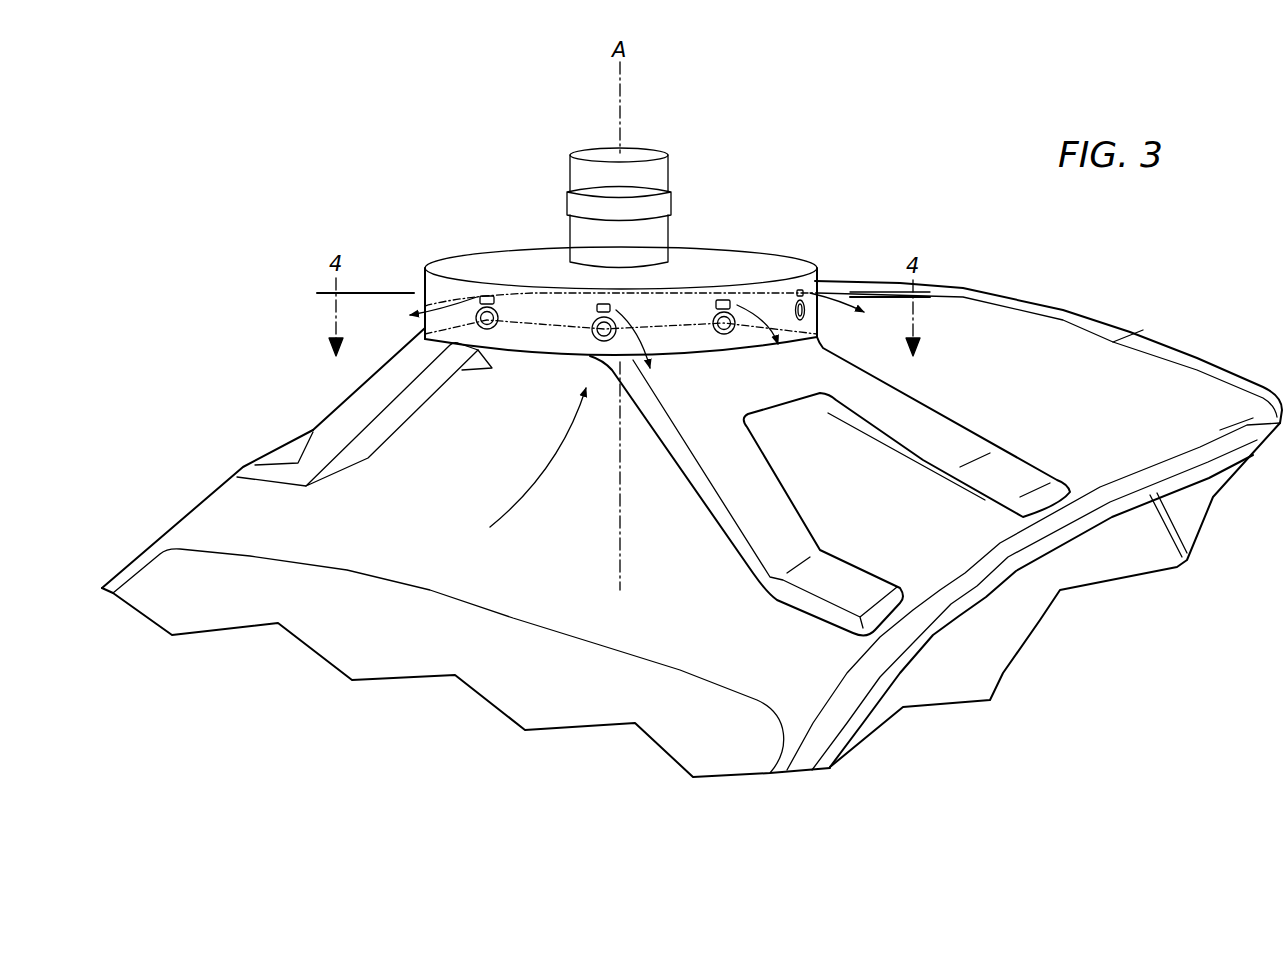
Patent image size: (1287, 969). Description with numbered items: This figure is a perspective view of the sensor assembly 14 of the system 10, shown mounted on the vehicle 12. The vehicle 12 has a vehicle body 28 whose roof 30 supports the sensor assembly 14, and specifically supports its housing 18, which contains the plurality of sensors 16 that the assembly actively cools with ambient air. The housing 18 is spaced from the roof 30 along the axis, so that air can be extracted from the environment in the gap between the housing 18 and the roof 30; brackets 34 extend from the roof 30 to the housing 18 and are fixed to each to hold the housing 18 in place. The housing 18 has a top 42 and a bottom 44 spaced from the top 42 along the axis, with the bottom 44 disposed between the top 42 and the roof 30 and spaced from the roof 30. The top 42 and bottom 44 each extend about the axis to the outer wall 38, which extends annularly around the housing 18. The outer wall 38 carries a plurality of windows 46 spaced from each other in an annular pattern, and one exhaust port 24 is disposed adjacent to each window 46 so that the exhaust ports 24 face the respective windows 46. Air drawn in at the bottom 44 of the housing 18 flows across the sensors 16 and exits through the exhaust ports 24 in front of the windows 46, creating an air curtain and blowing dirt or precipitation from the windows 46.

The system 10 is at (268, 192).
The vehicle 12 is at (184, 415).
The sensor assembly 14 is at (796, 110).
The sensors 16 is at (498, 315).
The housing 18 is at (793, 254).
The exhaust ports 24 is at (487, 296).
The vehicle body 28 is at (157, 520).
The roof 30 is at (207, 497).
The brackets 34 is at (357, 400).
The outer wall 38 is at (808, 292).
The top 42 is at (505, 262).
The bottom 44 is at (533, 357).
The windows 46 is at (476, 328).